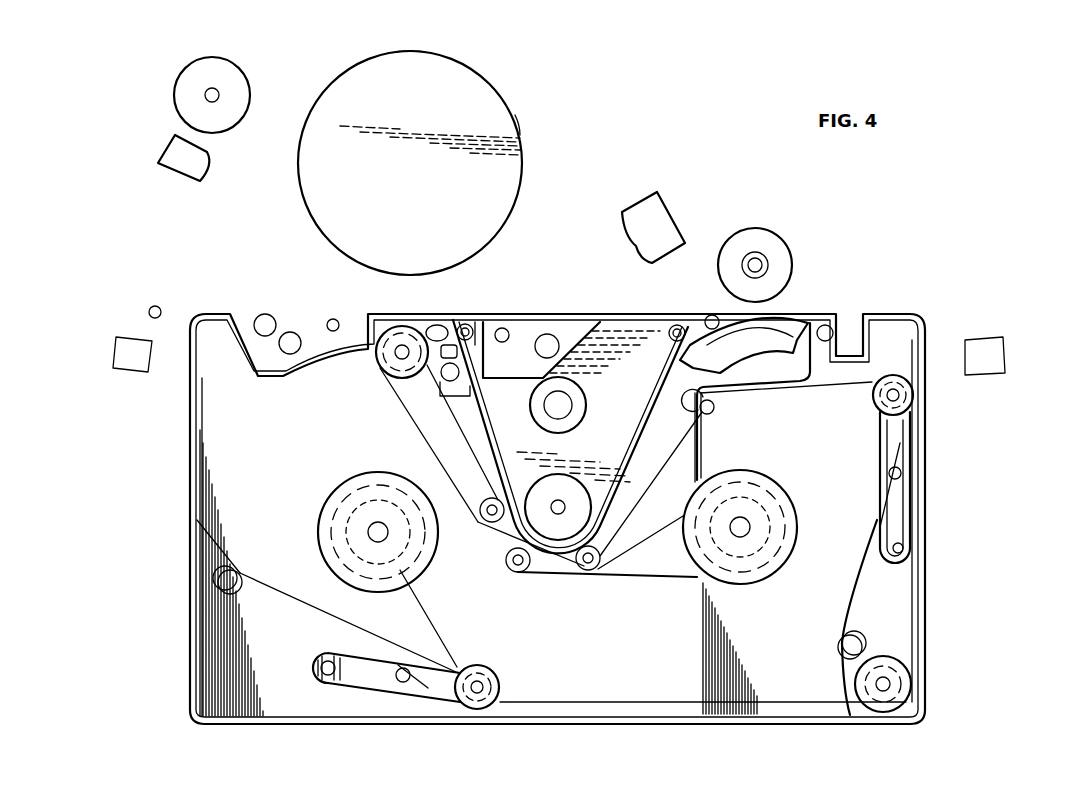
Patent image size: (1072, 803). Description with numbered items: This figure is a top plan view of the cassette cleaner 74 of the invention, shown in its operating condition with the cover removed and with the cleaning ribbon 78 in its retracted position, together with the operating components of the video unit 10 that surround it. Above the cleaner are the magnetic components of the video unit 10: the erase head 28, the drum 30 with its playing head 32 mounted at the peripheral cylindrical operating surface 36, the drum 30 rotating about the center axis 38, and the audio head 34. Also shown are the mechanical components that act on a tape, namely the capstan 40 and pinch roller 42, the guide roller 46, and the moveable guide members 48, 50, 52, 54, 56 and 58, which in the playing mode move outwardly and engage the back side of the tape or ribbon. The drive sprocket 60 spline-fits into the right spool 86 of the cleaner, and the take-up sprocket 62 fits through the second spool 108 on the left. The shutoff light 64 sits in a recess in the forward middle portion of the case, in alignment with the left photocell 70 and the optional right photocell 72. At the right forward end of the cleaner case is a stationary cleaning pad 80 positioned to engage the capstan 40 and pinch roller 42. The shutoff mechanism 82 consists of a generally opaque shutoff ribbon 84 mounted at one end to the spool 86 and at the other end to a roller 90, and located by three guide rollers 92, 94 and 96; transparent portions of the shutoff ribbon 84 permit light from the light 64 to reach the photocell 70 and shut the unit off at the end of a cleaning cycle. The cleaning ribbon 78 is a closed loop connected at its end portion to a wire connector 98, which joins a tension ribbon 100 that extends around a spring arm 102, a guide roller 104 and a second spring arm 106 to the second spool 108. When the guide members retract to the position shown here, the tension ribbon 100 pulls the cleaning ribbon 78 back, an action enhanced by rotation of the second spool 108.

The video unit 10 is at (678, 131).
The erase head 28 is at (172, 153).
The drum 30 is at (470, 80).
The playing head 32 is at (425, 52).
The audio head 34 is at (658, 210).
The peripheral operating surface 36 is at (518, 125).
The center axis 38 is at (413, 163).
The capstan 40 is at (710, 316).
The pinch roller 42 is at (763, 240).
The guide roller 46 is at (228, 72).
The moveable guide member 48 is at (148, 310).
The moveable guide member 50 is at (266, 315).
The moveable guide member 52 is at (290, 332).
The moveable guide member 54 is at (335, 318).
The moveable guide member 56 is at (503, 333).
The moveable guide member 58 is at (547, 340).
The drive sprocket 60 is at (790, 505).
The take-up sprocket 62 is at (360, 470).
The shutoff light 64 is at (553, 405).
The left photocell 70 is at (122, 355).
The right photocell 72 is at (992, 355).
The cleaning device 74 is at (580, 270).
The cleaning ribbon 78 is at (575, 322).
The stationary cleaning pad 80 is at (760, 318).
The shutoff mechanism 82 is at (658, 588).
The shutoff ribbon 84 is at (627, 580).
The spool 86 is at (770, 492).
The roller 90 is at (398, 335).
The guide roller 92 is at (588, 572).
The guide roller 94 is at (518, 572).
The guide roller 96 is at (490, 522).
The wire connector 98 is at (714, 412).
The tension ribbon 100 is at (847, 390).
The spring arm 102 is at (900, 503).
The guide roller 104 is at (905, 692).
The second spring arm 106 is at (500, 684).
The second spool 108 is at (330, 500).